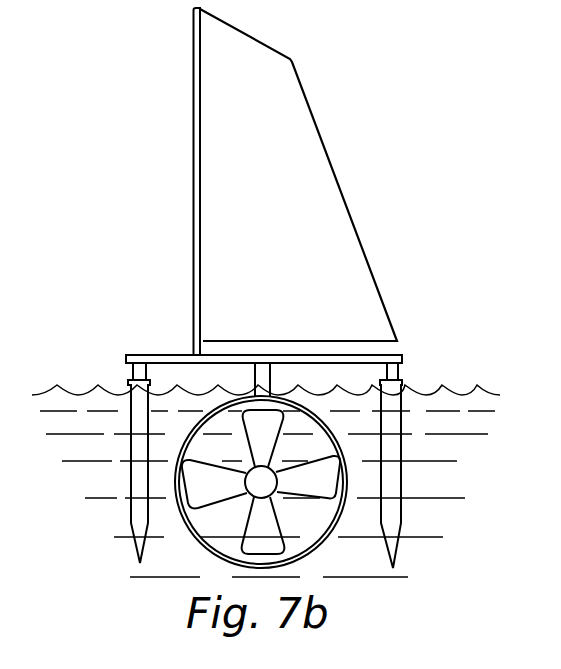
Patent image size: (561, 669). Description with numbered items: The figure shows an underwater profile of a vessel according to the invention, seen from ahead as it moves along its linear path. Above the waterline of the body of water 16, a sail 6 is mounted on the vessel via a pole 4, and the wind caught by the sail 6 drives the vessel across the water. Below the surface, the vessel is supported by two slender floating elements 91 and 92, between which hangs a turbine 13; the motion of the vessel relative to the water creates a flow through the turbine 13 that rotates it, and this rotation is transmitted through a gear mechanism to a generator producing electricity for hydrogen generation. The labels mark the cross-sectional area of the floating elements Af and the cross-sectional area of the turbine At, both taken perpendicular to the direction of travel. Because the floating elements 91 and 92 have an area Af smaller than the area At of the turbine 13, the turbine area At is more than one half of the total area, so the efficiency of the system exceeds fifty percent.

The pole 4 is at (193, 93).
The sail 6 is at (297, 86).
The turbine 13 is at (257, 502).
The body of water 16 is at (457, 400).
The floating element 91 is at (128, 383).
The floating element 92 is at (397, 383).
The area of the floating elements Af is at (139, 522).
The area of the turbine At is at (255, 543).